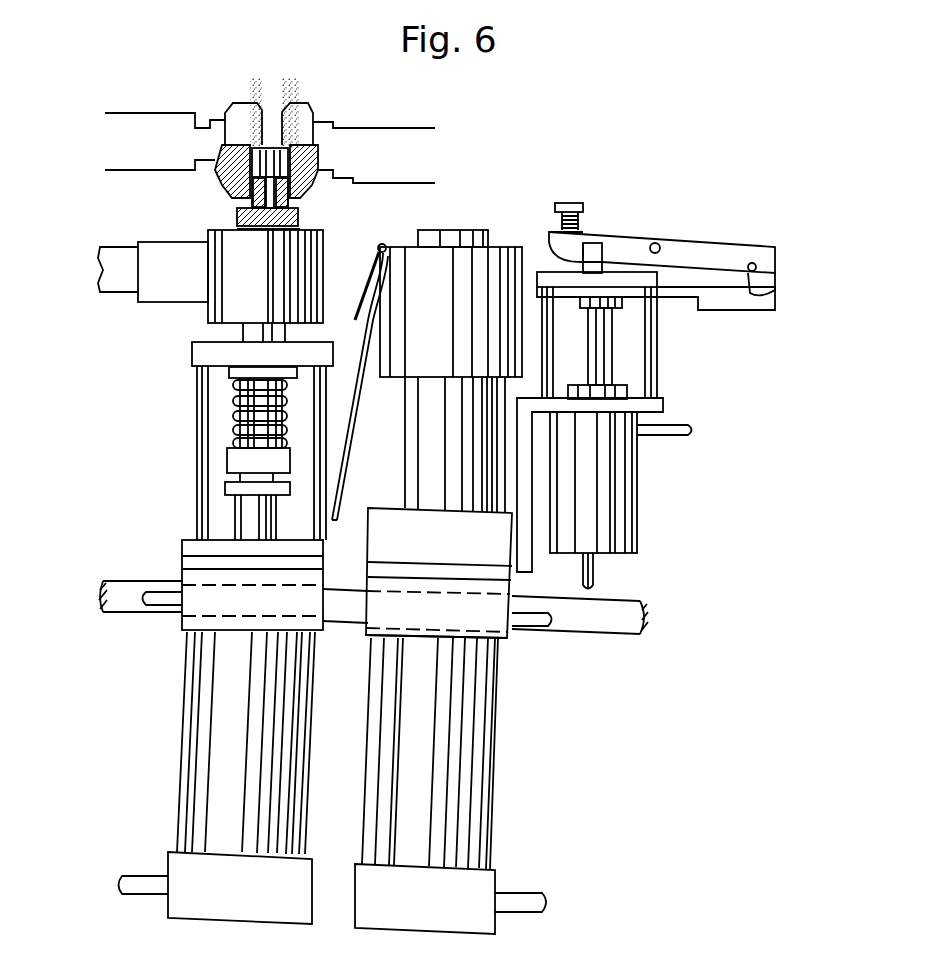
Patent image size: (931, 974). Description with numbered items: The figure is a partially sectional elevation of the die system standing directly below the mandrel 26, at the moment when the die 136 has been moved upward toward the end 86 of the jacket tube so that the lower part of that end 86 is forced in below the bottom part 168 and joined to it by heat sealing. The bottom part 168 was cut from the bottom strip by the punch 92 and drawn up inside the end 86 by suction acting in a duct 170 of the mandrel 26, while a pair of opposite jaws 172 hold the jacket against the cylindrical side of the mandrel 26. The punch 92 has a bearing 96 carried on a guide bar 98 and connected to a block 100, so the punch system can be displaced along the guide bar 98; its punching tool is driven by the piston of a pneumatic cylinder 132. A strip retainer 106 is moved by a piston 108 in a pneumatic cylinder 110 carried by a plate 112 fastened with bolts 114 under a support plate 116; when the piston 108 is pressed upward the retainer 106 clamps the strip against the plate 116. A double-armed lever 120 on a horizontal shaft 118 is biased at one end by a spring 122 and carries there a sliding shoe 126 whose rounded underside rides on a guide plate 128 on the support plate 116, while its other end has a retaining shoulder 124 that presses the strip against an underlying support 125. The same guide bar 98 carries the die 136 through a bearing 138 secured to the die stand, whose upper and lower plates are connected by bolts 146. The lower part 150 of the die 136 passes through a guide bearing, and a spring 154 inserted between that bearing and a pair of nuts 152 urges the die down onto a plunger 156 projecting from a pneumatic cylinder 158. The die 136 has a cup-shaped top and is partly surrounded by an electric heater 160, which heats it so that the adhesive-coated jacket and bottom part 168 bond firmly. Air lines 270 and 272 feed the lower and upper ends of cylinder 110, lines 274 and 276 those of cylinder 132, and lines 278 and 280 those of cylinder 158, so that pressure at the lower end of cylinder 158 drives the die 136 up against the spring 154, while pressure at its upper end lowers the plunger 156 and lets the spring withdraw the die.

The mandrel 26 is at (250, 197).
The end of the strip tube 86 is at (297, 192).
The punch 92 is at (427, 375).
The bearing 96 is at (498, 630).
The guide bar 98 is at (594, 628).
The block 100 is at (439, 573).
The strip retainer 106 is at (578, 303).
The piston 108 is at (598, 360).
The pneumatic cylinder 110 is at (618, 486).
The plate 112 is at (651, 405).
The bolts 114 is at (650, 365).
The support plate 116 is at (656, 280).
The horizontal shaft 118 is at (656, 243).
The double-armed lever 120 is at (713, 248).
The spring 122 is at (557, 212).
The retaining shoulder 124 is at (757, 294).
The support 125 is at (718, 308).
The sliding shoe 126 is at (585, 247).
The guide plate 128 is at (548, 256).
The pneumatic cylinder 132 is at (478, 752).
The die 136 is at (246, 226).
The bearing 138 is at (181, 620).
The bolts 146 is at (198, 480).
The lower part of the die 150 is at (240, 422).
The nuts 152 is at (257, 471).
The spring 154 is at (240, 385).
The plunger 156 is at (250, 512).
The pneumatic cylinder 158 is at (192, 797).
The heater 160 is at (265, 276).
The bottom part 168 is at (298, 218).
The duct 170 is at (232, 192).
The jaws 172 is at (293, 113).
The line 270 is at (594, 572).
The line 272 is at (668, 434).
The line 274 is at (506, 897).
The line 276 is at (523, 612).
The line 278 is at (145, 862).
The line 280 is at (152, 592).